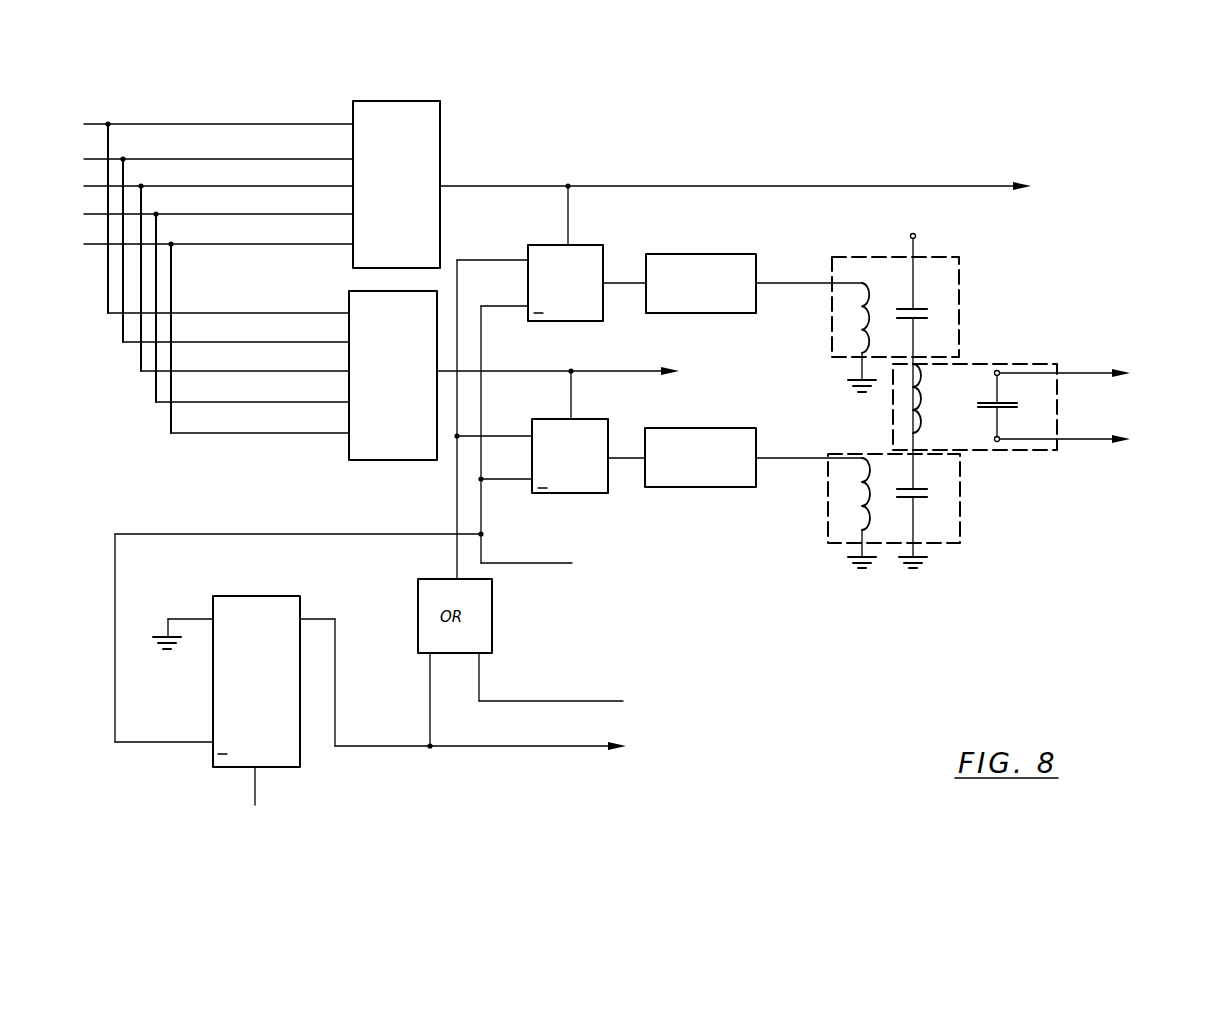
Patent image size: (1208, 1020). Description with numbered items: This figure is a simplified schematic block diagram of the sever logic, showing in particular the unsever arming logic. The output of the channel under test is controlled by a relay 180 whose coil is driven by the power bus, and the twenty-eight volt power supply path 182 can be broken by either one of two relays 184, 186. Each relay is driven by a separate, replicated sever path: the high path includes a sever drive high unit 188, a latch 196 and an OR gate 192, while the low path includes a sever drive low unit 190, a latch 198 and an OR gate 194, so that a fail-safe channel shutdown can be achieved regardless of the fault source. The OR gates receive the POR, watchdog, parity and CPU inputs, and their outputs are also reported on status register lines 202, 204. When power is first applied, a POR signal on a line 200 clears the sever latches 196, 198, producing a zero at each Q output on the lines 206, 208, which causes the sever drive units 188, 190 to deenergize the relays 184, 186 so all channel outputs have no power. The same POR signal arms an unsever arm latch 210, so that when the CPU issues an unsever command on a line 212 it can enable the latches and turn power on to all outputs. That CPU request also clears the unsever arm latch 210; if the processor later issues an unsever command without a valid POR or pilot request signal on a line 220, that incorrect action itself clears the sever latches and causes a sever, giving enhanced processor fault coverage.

The relay 180 is at (1057, 450).
The power supply path 182 is at (913, 472).
The relay 184 is at (957, 257).
The relay 186 is at (960, 508).
The sever drive high unit 188 is at (723, 313).
The sever drive low unit 190 is at (718, 487).
The OR gate 192 is at (441, 122).
The OR gate 194 is at (349, 301).
The latch 196 is at (565, 321).
The latch 198 is at (590, 493).
The line 200 is at (136, 124).
The status register line 202 is at (512, 186).
The status register line 204 is at (623, 371).
The line 206 is at (617, 283).
The line 208 is at (627, 458).
The unsever arm latch 210 is at (300, 752).
The line 212 is at (481, 543).
The line 220 is at (520, 700).